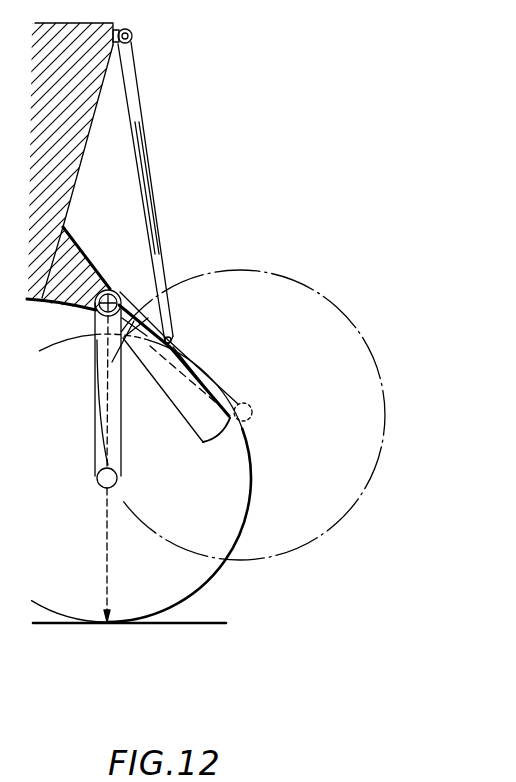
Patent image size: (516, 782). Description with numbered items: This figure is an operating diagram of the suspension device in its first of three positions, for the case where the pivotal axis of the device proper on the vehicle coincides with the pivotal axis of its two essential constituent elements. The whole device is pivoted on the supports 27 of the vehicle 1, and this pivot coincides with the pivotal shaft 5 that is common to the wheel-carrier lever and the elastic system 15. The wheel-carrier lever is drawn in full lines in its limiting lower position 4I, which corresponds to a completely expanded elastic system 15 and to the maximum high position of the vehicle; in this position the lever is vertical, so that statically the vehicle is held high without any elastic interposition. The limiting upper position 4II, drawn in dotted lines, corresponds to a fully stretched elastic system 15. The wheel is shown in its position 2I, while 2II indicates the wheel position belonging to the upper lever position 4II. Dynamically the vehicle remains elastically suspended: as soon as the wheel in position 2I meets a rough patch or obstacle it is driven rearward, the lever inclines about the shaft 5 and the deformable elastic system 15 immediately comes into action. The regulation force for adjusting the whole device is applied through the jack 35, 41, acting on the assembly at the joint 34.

The vehicle 1 is at (67, 174).
The jack 41 is at (133, 87).
The jack 35 is at (163, 270).
The supports 27 is at (77, 255).
The pivotal shaft 5 is at (112, 288).
The pin / sliding joint 34 is at (172, 338).
The limiting lower position of wheel-carrier lever 4I is at (97, 437).
The limiting upper position of wheel-carrier lever 4II is at (238, 393).
The elastic system 15 is at (185, 417).
The wheel in position I 2I is at (200, 582).
The wheel in position II 2II is at (345, 502).